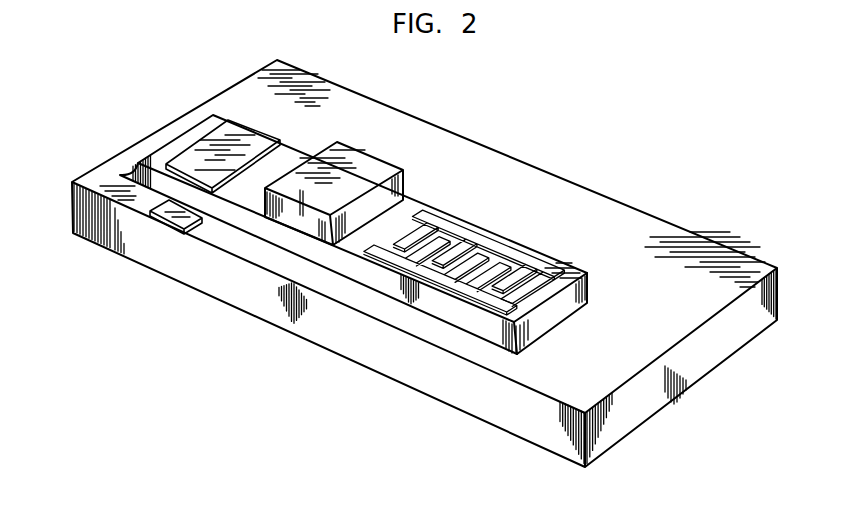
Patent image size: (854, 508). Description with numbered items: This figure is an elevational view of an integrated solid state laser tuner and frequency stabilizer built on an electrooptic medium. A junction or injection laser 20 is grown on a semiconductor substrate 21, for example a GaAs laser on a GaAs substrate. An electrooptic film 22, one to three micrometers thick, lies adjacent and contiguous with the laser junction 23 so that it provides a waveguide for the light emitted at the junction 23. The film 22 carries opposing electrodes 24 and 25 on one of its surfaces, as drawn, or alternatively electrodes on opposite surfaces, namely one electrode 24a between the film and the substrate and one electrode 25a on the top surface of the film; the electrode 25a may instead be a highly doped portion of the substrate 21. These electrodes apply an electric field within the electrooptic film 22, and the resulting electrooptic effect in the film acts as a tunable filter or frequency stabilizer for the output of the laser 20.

The junction laser 20 is at (366, 170).
The semiconductor substrate 21 is at (203, 268).
The electrooptic film 22 is at (550, 265).
The laser junction 23 is at (300, 232).
The electrode 24 is at (478, 238).
The electrode 24a is at (165, 214).
The electrode 25 is at (457, 284).
The electrode 25a is at (262, 134).